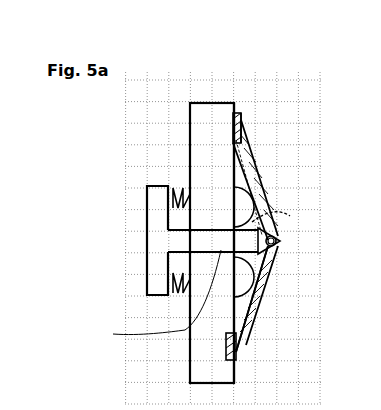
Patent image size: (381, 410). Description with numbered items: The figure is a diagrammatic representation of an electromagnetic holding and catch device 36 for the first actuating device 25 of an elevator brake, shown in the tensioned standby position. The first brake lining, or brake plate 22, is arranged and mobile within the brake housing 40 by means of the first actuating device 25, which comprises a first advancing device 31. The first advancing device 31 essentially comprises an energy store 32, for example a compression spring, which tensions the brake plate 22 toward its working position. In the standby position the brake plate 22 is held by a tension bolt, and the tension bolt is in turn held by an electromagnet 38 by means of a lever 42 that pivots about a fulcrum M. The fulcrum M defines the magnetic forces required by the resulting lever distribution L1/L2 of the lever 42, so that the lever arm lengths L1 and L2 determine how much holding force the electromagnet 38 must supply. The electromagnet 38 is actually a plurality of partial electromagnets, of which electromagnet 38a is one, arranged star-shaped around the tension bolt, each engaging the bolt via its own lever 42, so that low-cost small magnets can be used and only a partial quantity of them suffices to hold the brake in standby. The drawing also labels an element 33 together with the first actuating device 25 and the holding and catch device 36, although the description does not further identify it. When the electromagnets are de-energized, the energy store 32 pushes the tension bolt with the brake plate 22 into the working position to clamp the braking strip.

The brake housing 40 is at (210, 140).
The lever 42 is at (235, 175).
The first brake lining 22 is at (160, 262).
The first advancing device 31 is at (171, 216).
The energy store 32 is at (178, 188).
The first actuating device 25 is at (303, 238).
The lever 33 is at (303, 238).
The holding and catch device 36 is at (303, 238).
The electromagnet 38 is at (303, 238).
The electromagnet 38a is at (297, 277).
The lever arm L1 is at (244, 128).
The fulcrum M is at (270, 190).
The lever arm L2 is at (278, 215).